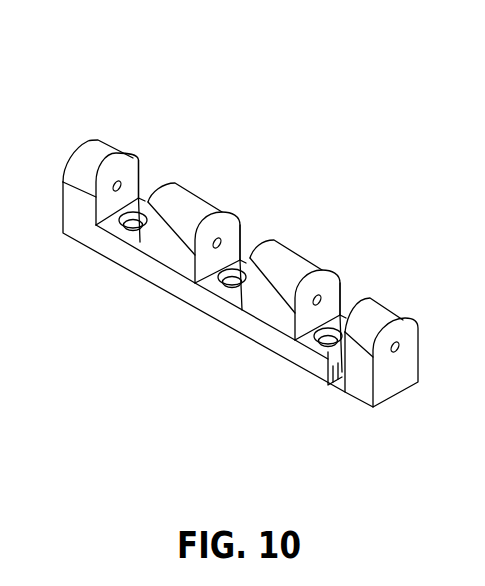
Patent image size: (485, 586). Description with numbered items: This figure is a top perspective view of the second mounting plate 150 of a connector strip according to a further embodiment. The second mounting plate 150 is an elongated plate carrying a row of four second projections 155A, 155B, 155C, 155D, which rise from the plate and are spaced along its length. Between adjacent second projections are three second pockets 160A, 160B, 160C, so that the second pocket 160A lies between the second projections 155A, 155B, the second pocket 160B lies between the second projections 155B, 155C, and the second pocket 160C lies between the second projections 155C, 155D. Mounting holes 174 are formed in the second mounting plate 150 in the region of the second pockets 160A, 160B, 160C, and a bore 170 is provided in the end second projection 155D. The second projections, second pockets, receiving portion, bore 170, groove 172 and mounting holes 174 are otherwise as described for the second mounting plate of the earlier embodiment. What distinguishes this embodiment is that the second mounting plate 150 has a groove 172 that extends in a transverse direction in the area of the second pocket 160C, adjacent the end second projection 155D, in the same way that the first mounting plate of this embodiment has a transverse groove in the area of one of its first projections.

The second mounting plate 150 is at (273, 318).
The second projection 155A is at (88, 160).
The second projection 155B is at (190, 205).
The second projection 155C is at (282, 256).
The second projection 155D is at (380, 313).
The second pocket 160A is at (142, 252).
The second pocket 160B is at (195, 284).
The second pocket 160C is at (326, 355).
The bore 170 is at (399, 349).
The groove 172 is at (332, 384).
The mounting holes 174 is at (132, 221).